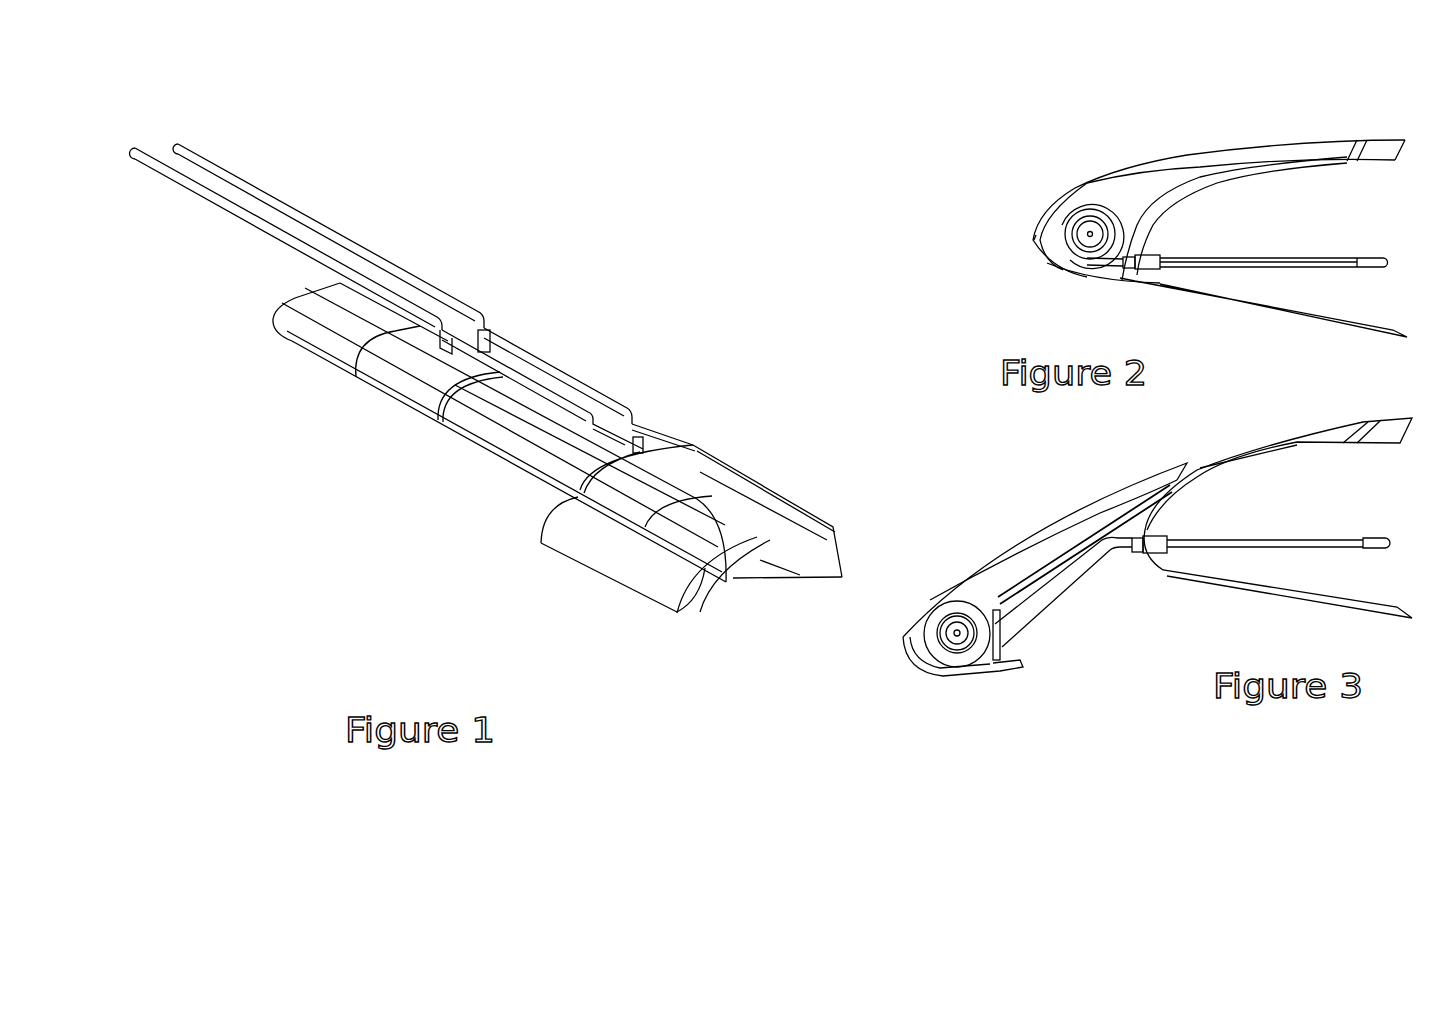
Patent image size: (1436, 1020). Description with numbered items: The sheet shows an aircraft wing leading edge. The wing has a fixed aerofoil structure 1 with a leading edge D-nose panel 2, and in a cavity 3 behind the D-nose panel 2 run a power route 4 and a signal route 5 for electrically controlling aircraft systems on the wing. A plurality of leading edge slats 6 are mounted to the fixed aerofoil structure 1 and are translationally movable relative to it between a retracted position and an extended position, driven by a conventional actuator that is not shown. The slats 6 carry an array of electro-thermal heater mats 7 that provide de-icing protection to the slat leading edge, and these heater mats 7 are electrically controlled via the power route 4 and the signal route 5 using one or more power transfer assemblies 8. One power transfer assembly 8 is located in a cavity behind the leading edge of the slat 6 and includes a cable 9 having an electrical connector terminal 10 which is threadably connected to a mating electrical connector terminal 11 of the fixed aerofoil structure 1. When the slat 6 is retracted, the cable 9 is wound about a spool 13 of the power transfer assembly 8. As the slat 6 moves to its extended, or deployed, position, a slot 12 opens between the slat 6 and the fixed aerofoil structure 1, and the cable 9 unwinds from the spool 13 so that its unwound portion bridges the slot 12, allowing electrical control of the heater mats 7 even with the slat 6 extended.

In FIG. 1, the fixed aerofoil structure 1 is at (803, 573).
In FIG. 2, the fixed aerofoil structure 1 is at (1333, 210).
In FIG. 3, the fixed aerofoil structure 1 is at (1318, 495).
In FIG. 1, the leading edge D-nose panel 2 is at (815, 585).
In FIG. 2, the leading edge D-nose panel 2 is at (1193, 197).
In FIG. 3, the leading edge D-nose panel 2 is at (1267, 457).
In FIG. 1, the cavity 3 is at (575, 386).
In FIG. 1, the power route 4 is at (260, 193).
In FIG. 1, the signal route 5 is at (153, 160).
In FIG. 1, the leading edge slat 6 is at (612, 538).
In FIG. 2, the leading edge slat 6 is at (1133, 197).
In FIG. 1, the electro-thermal heater mat 7 is at (537, 467).
In FIG. 2, the power transfer assembly 8 is at (1057, 242).
In FIG. 2, the cable 9 is at (1093, 257).
In FIG. 3, the cable 9 is at (1047, 600).
In FIG. 2, the electrical connector terminal 10 is at (1130, 260).
In FIG. 2, the mating electrical connector terminal 11 is at (1147, 263).
In FIG. 3, the slot 12 is at (1113, 590).
In FIG. 2, the spool 13 is at (1070, 213).
In FIG. 3, the spool 13 is at (955, 607).